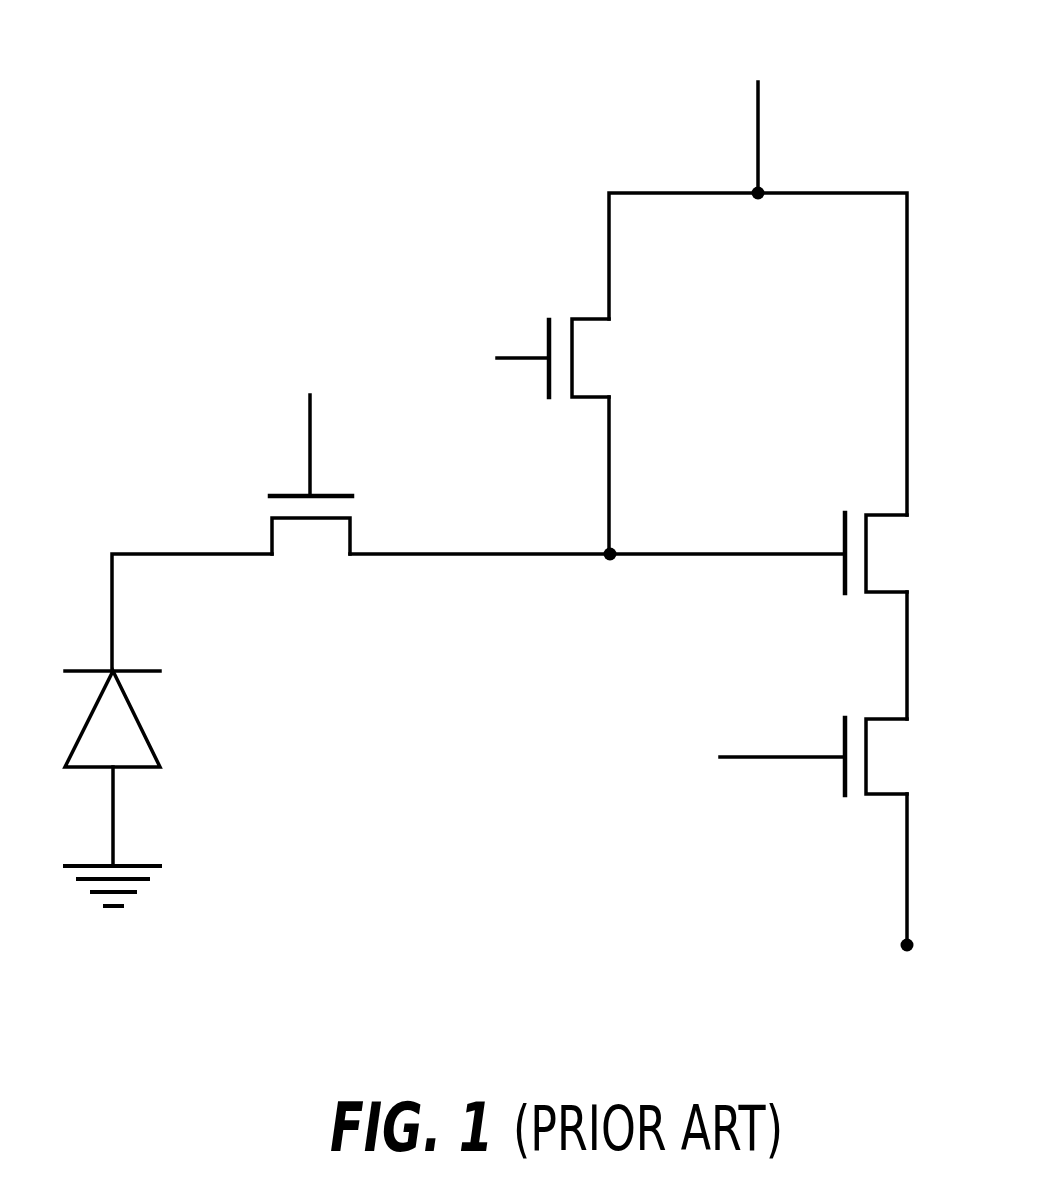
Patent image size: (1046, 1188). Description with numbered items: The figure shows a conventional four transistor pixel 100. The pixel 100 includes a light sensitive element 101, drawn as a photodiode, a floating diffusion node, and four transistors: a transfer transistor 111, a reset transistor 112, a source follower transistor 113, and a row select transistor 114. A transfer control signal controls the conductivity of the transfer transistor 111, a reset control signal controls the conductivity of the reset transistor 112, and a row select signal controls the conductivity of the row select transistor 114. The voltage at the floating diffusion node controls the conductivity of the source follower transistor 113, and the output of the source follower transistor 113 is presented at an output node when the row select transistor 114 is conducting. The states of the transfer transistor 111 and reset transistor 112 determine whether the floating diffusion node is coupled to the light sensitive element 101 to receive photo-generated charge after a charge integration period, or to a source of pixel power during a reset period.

The four transistor pixel 100 is at (260, 150).
The light sensitive element 101 is at (113, 737).
The transfer transistor 111 is at (288, 496).
The reset transistor 112 is at (574, 350).
The source follower transistor 113 is at (881, 513).
The row select transistor 114 is at (881, 718).